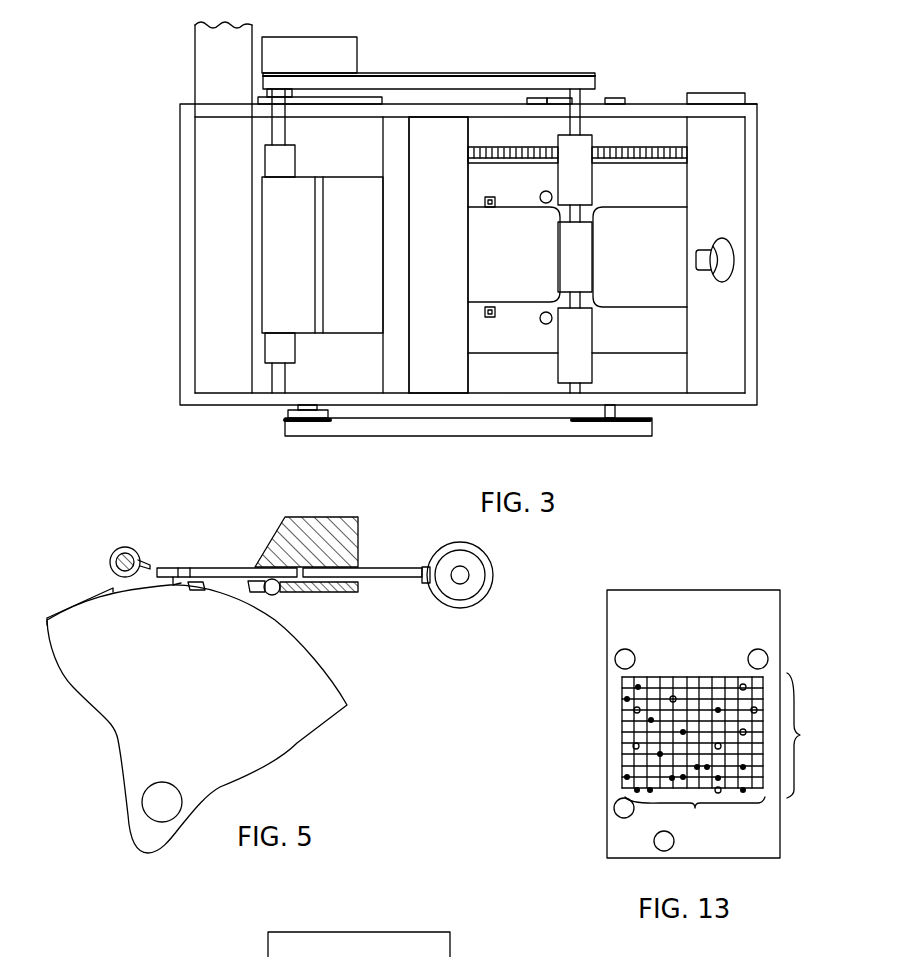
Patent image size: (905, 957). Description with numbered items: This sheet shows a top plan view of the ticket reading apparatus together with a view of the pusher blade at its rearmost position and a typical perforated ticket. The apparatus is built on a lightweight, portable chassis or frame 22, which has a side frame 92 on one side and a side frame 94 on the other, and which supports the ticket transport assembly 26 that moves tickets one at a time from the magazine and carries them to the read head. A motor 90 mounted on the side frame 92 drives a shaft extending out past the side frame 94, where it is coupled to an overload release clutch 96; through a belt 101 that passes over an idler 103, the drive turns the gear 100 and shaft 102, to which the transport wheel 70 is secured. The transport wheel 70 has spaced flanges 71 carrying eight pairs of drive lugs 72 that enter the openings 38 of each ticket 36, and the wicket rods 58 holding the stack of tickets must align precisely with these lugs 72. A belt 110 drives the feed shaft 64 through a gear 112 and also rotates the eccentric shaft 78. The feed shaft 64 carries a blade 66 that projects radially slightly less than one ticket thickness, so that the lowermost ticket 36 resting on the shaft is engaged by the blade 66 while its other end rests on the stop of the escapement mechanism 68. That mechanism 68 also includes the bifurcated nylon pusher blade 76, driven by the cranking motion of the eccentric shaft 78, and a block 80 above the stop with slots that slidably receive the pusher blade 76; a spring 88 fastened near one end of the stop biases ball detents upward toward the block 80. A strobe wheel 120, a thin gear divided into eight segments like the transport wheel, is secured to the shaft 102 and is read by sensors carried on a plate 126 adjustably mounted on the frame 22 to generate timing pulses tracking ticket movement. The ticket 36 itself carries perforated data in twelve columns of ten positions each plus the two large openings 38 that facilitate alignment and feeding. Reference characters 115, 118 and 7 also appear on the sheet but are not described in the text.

In FIG. 3, the gear 112 is at (277, 73).
In FIG. 3, the motor 90 is at (330, 73).
In FIG. 3, the belt 110 is at (470, 76).
In FIG. 3, the plate 126 is at (617, 100).
In FIG. 3, the chassis or frame 22 is at (671, 108).
In FIG. 3, the side frame 92 is at (672, 112).
In FIG. 3, the top plate 115 is at (735, 103).
In FIG. 3, the eccentric shaft 78 is at (262, 163).
In FIG. 5, the eccentric shaft 78 is at (493, 600).
In FIG. 3, the block 80 is at (453, 233).
In FIG. 3, the pusher blade 76 is at (370, 251).
In FIG. 3, the strobe wheel 120 is at (603, 162).
In FIG. 3, the wicket rods 58 is at (545, 191).
In FIG. 3, the drive lugs 72 is at (490, 207).
In FIG. 5, the drive lugs 72 is at (205, 590).
In FIG. 3, the feed shaft 64 is at (574, 242).
In FIG. 5, the feed shaft 64 is at (112, 556).
In FIG. 3, the blade 66 is at (561, 270).
In FIG. 5, the blade 66 is at (148, 567).
In FIG. 3, the knob 118 is at (730, 228).
In FIG. 3, the transport wheel or spool 70 is at (660, 332).
In FIG. 3, the ticket transport assembly 26 is at (667, 382).
In FIG. 5, the ticket transport assembly 26 is at (170, 520).
In FIG. 3, the overload release clutch 96 is at (288, 414).
In FIG. 3, the idler 103 is at (287, 430).
In FIG. 3, the belt 101 is at (500, 434).
In FIG. 3, the gear 100 is at (620, 436).
In FIG. 3, the shaft 102 is at (615, 410).
In FIG. 5, the shaft 102 is at (150, 800).
In FIG. 3, the side frame 94 is at (737, 405).
In FIG. 3, the escapement mechanism 68 is at (285, 277).
In FIG. 5, the escapement mechanism 68 is at (395, 490).
In FIG. 5, the section line 7- 7 is at (243, 603).
In FIG. 5, the ticket 36 is at (213, 568).
In FIG. 13, the ticket 36 is at (766, 631).
In FIG. 5, the openings 38 is at (175, 585).
In FIG. 13, the openings 38 is at (620, 795).
In FIG. 5, the spring 88 is at (290, 595).
In FIG. 5, the flanges 71 is at (203, 705).